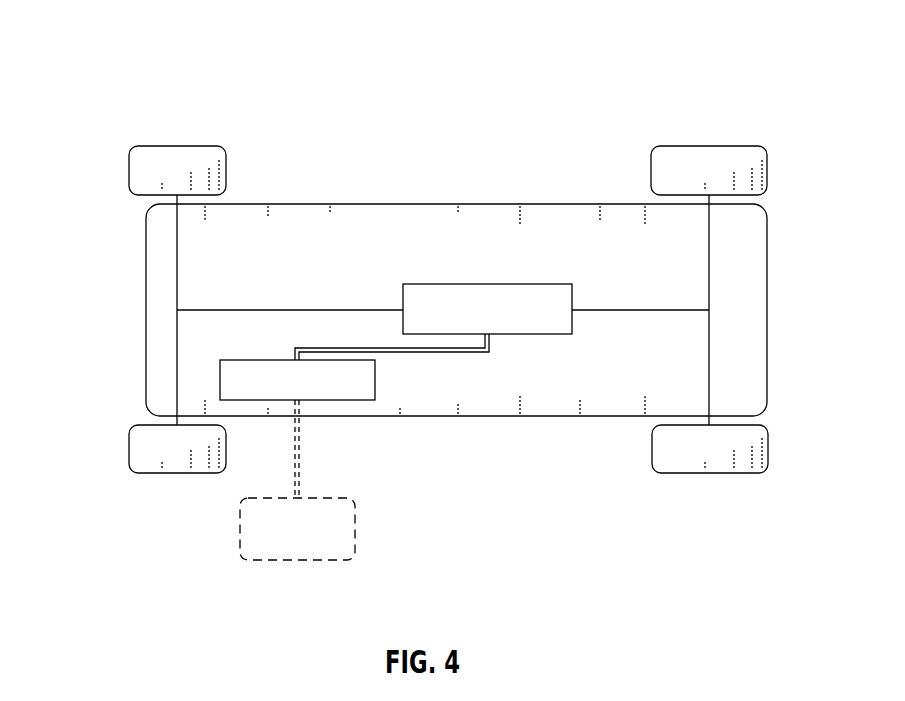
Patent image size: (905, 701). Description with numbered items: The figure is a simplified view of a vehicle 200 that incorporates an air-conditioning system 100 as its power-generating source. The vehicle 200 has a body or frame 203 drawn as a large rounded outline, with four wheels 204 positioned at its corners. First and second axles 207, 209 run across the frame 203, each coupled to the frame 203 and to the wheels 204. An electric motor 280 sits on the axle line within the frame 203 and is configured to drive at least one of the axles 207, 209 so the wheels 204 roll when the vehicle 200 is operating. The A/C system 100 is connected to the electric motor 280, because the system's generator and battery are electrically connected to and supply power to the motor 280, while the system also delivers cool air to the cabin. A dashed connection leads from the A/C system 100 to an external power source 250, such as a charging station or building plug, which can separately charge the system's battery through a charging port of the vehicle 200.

The vehicle 200 is at (96, 62).
The vehicle body or frame 203 is at (356, 203).
The wheels 204 is at (146, 146).
The first axle 207 is at (710, 290).
The second axle 209 is at (177, 290).
The electric motor 280 is at (487, 284).
The A/C system 100 is at (220, 378).
The power source 250 is at (291, 563).